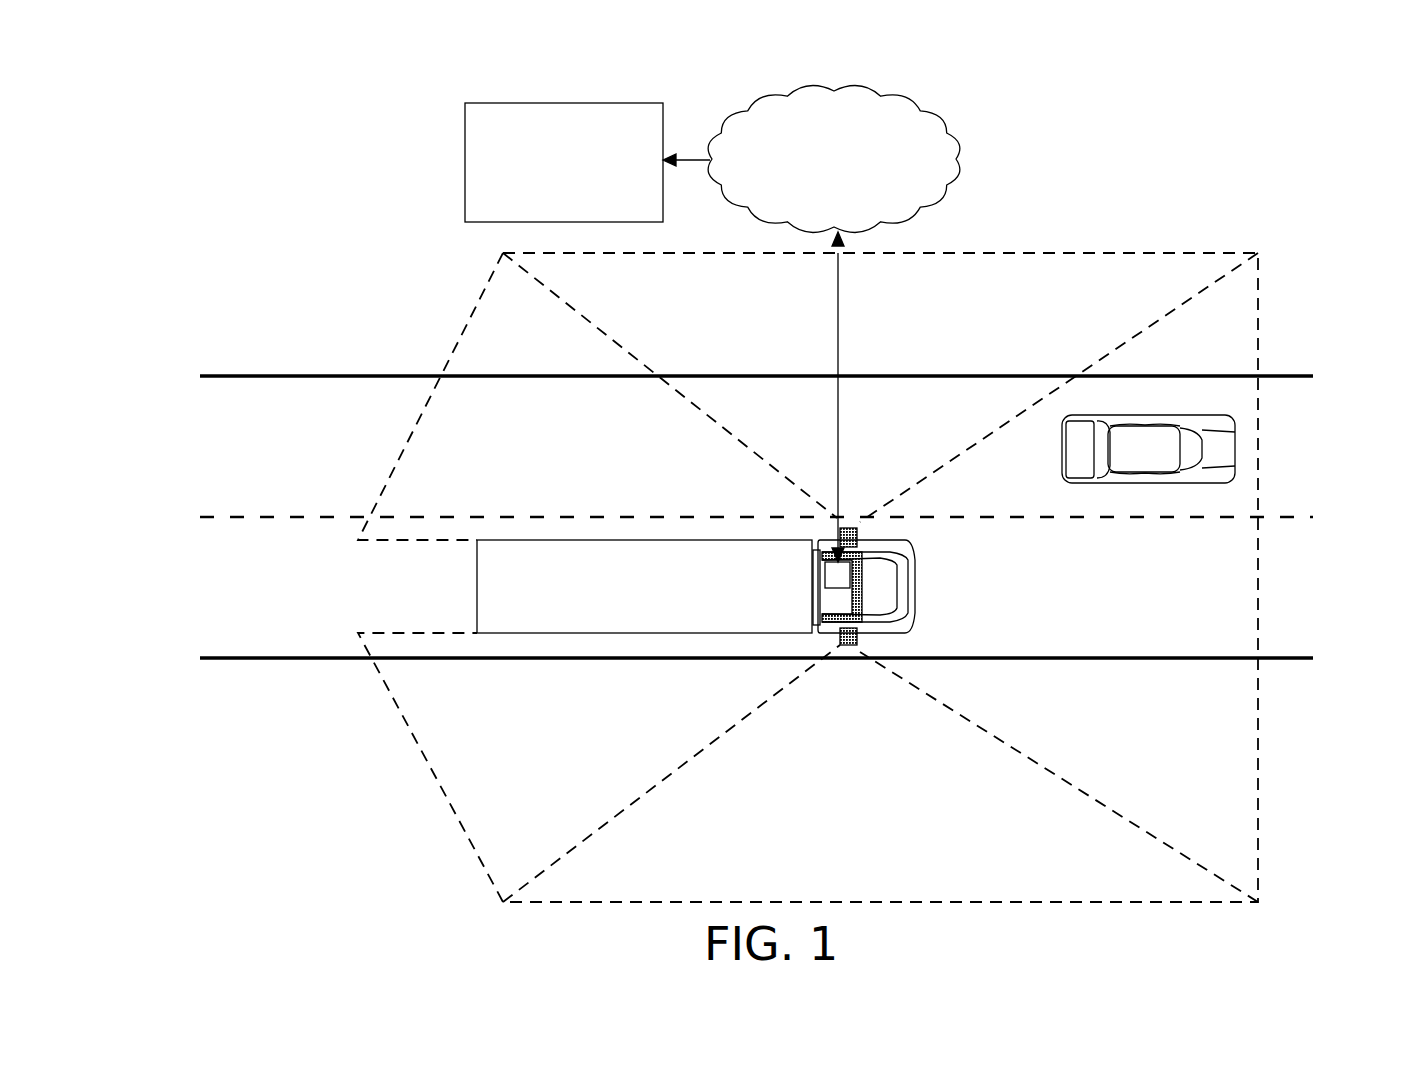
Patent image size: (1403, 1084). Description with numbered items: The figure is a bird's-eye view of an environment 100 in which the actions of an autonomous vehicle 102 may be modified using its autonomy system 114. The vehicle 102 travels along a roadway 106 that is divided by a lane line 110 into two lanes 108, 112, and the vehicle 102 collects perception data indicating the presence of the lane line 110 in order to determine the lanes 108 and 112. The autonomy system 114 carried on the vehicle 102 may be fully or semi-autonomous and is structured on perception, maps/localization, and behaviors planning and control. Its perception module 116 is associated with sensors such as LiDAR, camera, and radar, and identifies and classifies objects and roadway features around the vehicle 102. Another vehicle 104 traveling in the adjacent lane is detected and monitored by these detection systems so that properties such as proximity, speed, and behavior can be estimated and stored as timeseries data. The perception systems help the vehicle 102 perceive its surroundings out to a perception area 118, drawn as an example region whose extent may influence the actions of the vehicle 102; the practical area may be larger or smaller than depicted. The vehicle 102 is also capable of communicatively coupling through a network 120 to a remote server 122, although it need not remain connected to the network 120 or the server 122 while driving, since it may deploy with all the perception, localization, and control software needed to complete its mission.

The environment 100 is at (1278, 90).
The autonomous vehicle 102 is at (565, 540).
The vehicle 104 is at (1085, 484).
The roadway 106 is at (246, 374).
The lane 108 is at (249, 440).
The lane line 110 is at (301, 515).
The lane 112 is at (249, 606).
The autonomy system 114 is at (836, 560).
The perception module 116 is at (846, 646).
The perception area 118 is at (1032, 252).
The network 120 is at (834, 159).
The remote server 122 is at (587, 162).